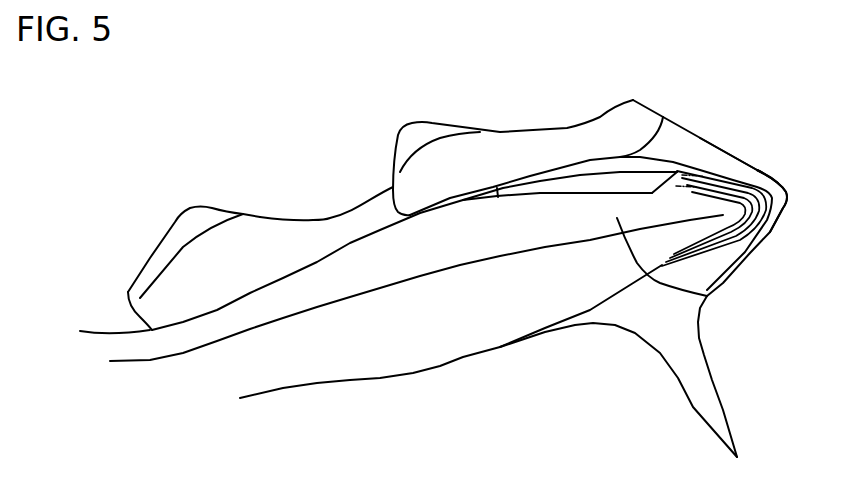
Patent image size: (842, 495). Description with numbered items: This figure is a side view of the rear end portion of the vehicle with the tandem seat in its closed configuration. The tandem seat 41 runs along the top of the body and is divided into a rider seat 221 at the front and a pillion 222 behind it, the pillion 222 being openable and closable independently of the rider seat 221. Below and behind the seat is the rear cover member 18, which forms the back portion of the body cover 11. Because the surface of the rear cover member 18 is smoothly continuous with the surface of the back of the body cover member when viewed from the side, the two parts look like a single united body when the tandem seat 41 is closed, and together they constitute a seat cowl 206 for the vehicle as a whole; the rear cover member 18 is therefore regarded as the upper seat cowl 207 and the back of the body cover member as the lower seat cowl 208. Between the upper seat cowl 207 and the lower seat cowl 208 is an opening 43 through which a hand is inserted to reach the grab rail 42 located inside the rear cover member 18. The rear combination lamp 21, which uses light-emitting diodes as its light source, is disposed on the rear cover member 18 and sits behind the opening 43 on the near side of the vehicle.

The body cover 11 is at (371, 384).
The rear cover member 18 is at (773, 187).
The rear combination lamp 21 is at (720, 193).
The tandem seat 41 is at (313, 199).
The grab rail 42 is at (606, 180).
The opening 43 is at (572, 186).
The seat cowl 206 is at (765, 168).
The upper seat cowl 207 is at (687, 140).
The lower seat cowl 208 is at (707, 300).
The rider seat 221 is at (262, 227).
The pillion 222 is at (535, 137).